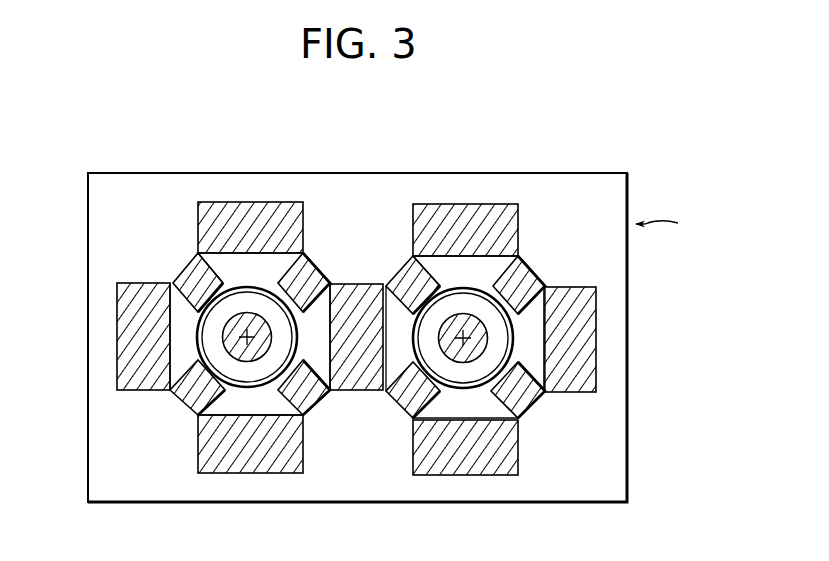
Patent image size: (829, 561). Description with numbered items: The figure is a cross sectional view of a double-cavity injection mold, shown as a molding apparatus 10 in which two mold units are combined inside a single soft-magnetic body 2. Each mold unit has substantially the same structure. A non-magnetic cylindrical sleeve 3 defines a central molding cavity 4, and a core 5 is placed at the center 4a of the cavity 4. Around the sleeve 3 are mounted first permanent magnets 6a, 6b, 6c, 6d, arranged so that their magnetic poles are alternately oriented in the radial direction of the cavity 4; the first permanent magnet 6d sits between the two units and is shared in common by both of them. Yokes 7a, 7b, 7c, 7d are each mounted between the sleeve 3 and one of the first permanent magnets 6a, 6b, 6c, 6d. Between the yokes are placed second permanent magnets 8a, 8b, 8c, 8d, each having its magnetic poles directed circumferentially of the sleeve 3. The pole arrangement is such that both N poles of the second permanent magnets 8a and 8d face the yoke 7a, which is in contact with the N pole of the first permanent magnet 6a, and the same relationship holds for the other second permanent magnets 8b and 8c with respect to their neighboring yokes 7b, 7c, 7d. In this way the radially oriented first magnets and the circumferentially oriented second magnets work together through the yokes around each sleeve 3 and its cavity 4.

The soft-magnetic body 2 is at (121, 172).
The non-magnetic cylindrical sleeve 3 is at (203, 321).
The central molding cavity 4 is at (255, 370).
The shaft axis 4a is at (249, 335).
The core 5 is at (232, 340).
The first permanent magnet 6a is at (224, 215).
The first permanent magnet 6b is at (122, 300).
The first permanent magnet 6c is at (225, 450).
The first permanent magnet 6d is at (360, 290).
The yoke 7a is at (262, 284).
The yoke 7b is at (196, 346).
The yoke 7c is at (262, 411).
The yoke 7d is at (326, 346).
The second permanent magnet 8a is at (182, 278).
The second permanent magnet 8b is at (187, 398).
The second permanent magnet 8c is at (272, 383).
The second permanent magnet 8d is at (322, 262).
The molding apparatus 10 is at (712, 232).